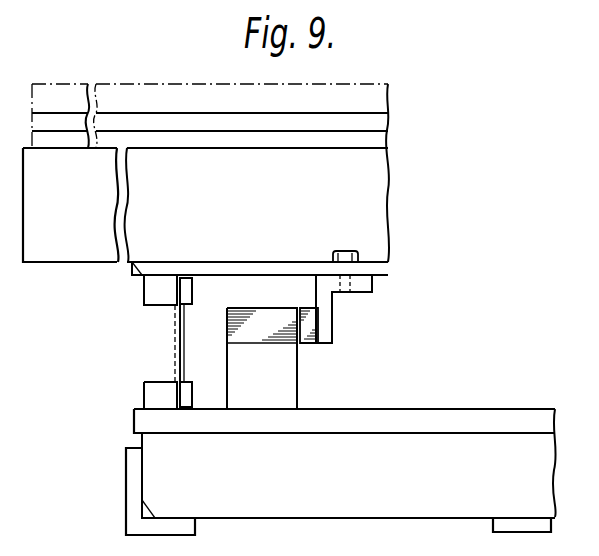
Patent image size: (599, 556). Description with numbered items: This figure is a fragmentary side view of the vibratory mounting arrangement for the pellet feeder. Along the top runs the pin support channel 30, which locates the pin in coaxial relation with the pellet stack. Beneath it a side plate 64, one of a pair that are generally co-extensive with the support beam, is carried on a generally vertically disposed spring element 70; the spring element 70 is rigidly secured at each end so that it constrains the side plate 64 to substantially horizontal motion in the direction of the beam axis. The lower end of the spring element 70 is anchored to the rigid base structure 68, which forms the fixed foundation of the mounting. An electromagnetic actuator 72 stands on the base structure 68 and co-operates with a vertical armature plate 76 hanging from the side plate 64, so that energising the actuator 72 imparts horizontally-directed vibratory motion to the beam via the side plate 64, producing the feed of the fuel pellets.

The pin support channel 30 is at (147, 95).
The side plate 64 is at (141, 268).
The spring element 70 is at (178, 352).
The electromagnetic actuator 72 is at (278, 378).
The vertical armature plate 76 is at (327, 322).
The rigid base structure 68 is at (380, 496).